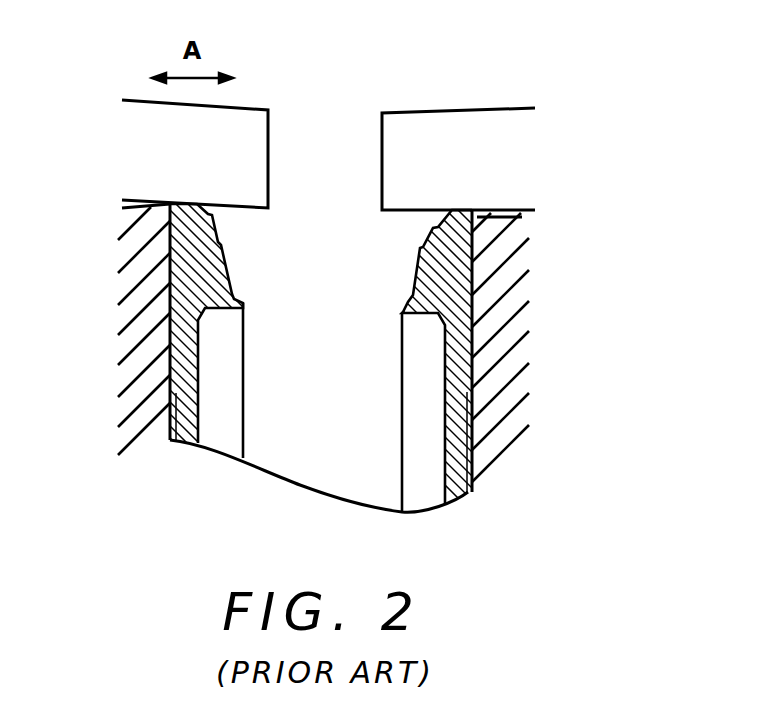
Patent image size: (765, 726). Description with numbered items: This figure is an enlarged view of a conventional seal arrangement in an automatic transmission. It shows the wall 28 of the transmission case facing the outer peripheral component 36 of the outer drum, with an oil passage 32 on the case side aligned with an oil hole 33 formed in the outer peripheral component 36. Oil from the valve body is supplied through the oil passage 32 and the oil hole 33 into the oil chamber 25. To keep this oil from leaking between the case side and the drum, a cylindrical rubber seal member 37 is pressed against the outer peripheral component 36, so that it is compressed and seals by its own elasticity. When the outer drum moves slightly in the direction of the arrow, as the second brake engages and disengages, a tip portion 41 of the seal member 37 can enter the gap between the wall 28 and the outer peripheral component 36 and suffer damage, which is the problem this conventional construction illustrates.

The oil chamber 25 is at (299, 94).
The wall 28 is at (510, 302).
The oil passage 32 is at (355, 395).
The oil hole 33 is at (350, 130).
The outer peripheral component 36 is at (482, 130).
The seal member 37 is at (482, 372).
The tip portion 41 is at (168, 207).